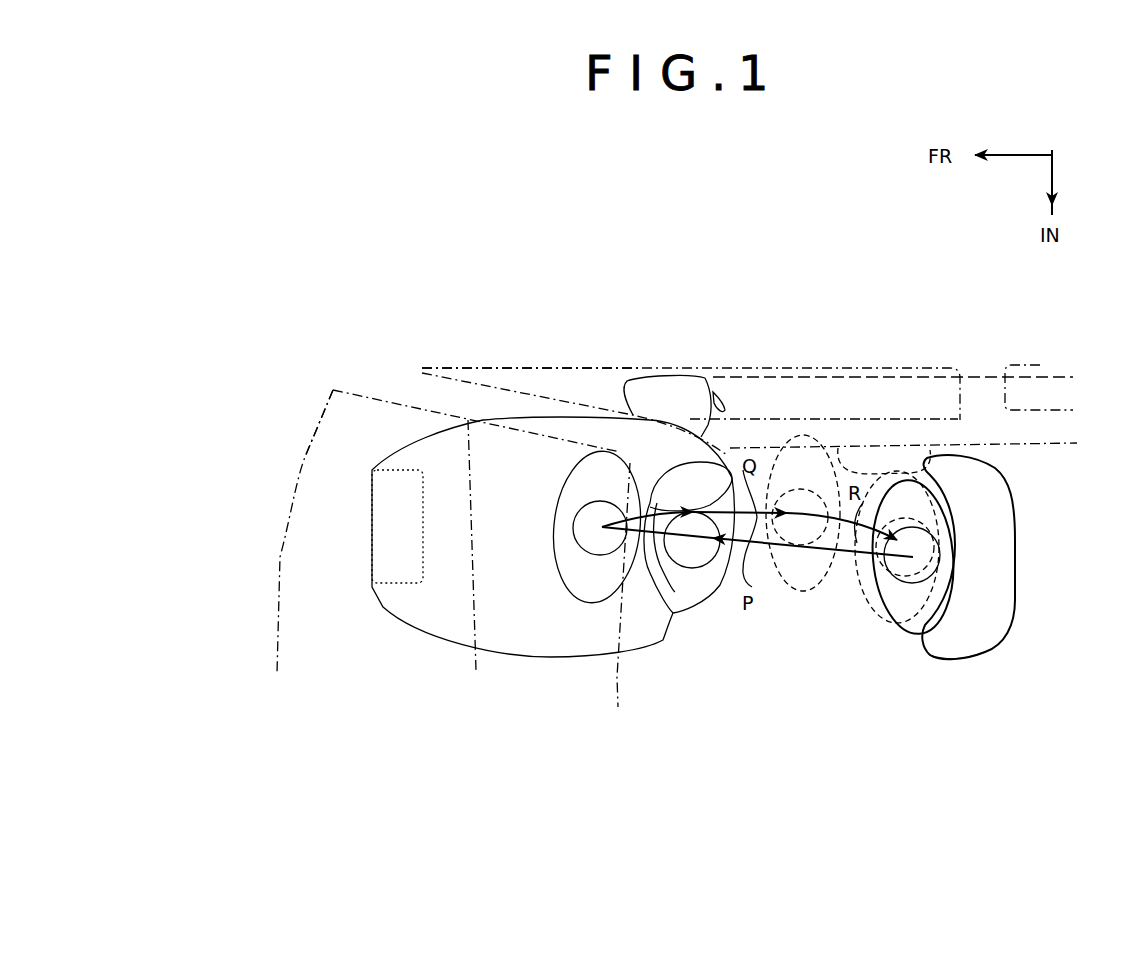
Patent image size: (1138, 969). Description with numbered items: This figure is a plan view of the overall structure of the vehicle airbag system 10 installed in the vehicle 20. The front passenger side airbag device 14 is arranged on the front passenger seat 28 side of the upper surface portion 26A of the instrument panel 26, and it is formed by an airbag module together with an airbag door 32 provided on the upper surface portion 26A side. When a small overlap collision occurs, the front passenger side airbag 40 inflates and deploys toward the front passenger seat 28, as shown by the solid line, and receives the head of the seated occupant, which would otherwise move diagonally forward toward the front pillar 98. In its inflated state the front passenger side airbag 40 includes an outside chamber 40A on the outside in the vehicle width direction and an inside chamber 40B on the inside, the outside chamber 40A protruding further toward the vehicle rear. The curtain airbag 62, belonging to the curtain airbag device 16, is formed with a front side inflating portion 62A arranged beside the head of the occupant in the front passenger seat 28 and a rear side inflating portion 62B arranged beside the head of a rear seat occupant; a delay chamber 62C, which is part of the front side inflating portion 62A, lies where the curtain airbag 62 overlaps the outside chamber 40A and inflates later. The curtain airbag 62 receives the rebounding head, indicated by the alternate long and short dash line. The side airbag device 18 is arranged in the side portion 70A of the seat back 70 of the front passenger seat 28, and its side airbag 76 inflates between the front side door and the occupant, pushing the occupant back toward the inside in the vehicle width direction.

The vehicle airbag system 10 is at (570, 387).
The front passenger side airbag device 14 is at (553, 583).
The airbag 16 is at (1019, 555).
The side airbag device 18 is at (893, 385).
The vehicle 20 is at (1052, 323).
The instrument panel 26 is at (273, 577).
The upper surface portion 26A is at (320, 487).
The front passenger seat 28 is at (986, 655).
The airbag door 32 is at (383, 537).
The front passenger side airbag 40 is at (520, 662).
The outside chamber 40A is at (705, 378).
The inside chamber 40B is at (670, 628).
The curtain airbag 62 is at (1019, 555).
The front side inflating portion 62A is at (793, 377).
The rear side inflating portion 62B is at (1040, 363).
The delay chamber 62C is at (660, 372).
The seat back 70 is at (1022, 452).
The side portion 70A is at (943, 467).
The side airbag 76 is at (908, 437).
The front pillar 98 is at (470, 377).